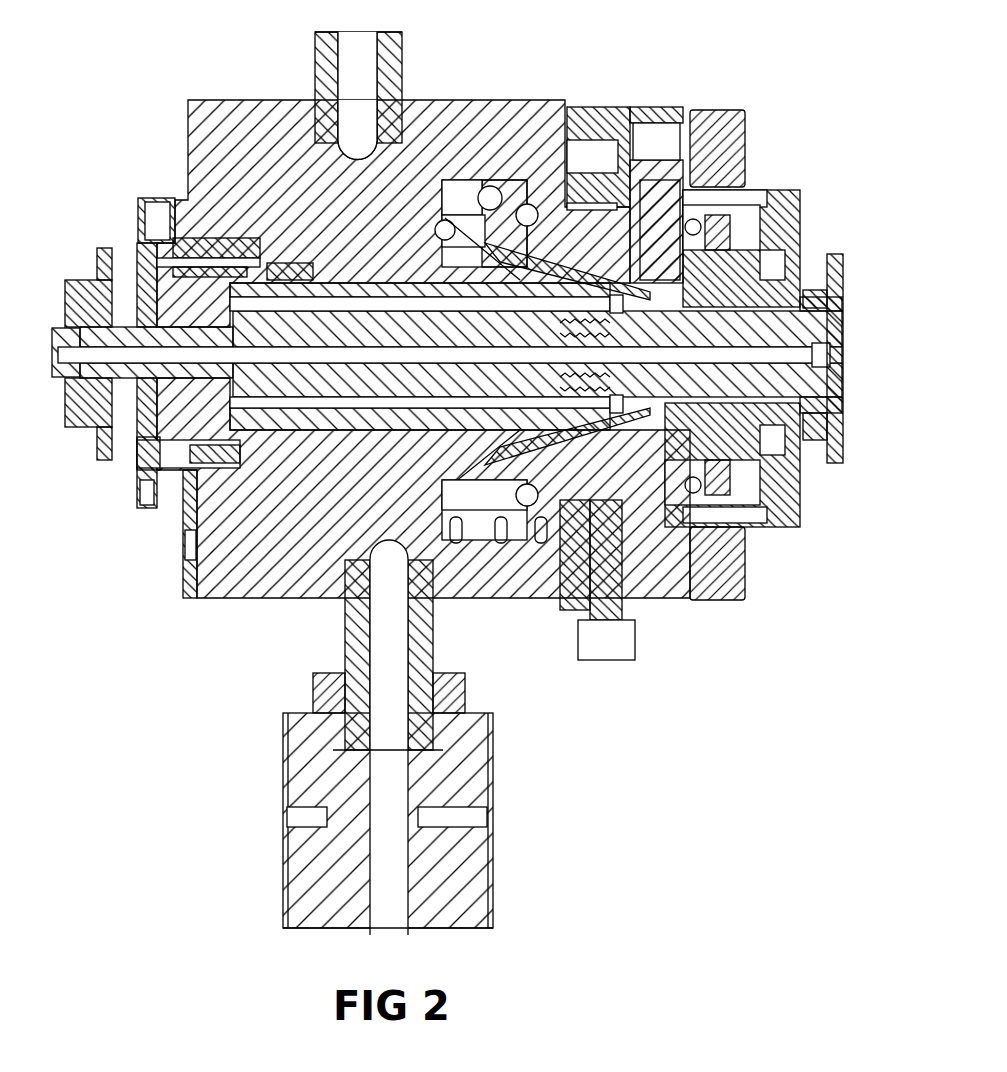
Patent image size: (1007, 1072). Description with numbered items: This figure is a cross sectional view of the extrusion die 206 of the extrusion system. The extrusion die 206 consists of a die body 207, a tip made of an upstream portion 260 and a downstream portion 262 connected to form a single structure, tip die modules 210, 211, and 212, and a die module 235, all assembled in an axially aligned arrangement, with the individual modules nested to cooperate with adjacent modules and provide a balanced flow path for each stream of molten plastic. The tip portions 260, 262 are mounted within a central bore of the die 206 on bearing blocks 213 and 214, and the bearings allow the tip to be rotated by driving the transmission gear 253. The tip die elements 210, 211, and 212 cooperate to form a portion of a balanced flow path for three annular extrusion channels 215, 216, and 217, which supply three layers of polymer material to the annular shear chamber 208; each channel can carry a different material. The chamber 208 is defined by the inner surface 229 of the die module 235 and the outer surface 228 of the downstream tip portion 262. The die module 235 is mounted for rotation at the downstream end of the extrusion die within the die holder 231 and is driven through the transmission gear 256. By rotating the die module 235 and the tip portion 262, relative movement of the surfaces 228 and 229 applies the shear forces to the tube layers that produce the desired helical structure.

The extrusion die 206 is at (490, 55).
The die body 207 is at (440, 115).
The annular chamber 208 is at (850, 307).
The tip die module 210 is at (517, 197).
The tip die module 211 is at (545, 190).
The tip die module 212 is at (557, 167).
The bearing block 213 is at (288, 248).
The bearing block 214 is at (707, 110).
The annular extrusion channel 215 is at (440, 240).
The annular extrusion channel 216 is at (470, 180).
The annular extrusion channel 217 is at (640, 160).
The outer surface of the downstream tip portion 228 is at (837, 395).
The inner surface of the die module 229 is at (798, 477).
The die holder 231 is at (663, 268).
The die module 235 is at (790, 190).
The transmission gear 253 is at (65, 280).
The transmission gear 256 is at (842, 263).
The upstream portion of the tip 260 is at (207, 383).
The downstream portion of the tip 262 is at (827, 322).